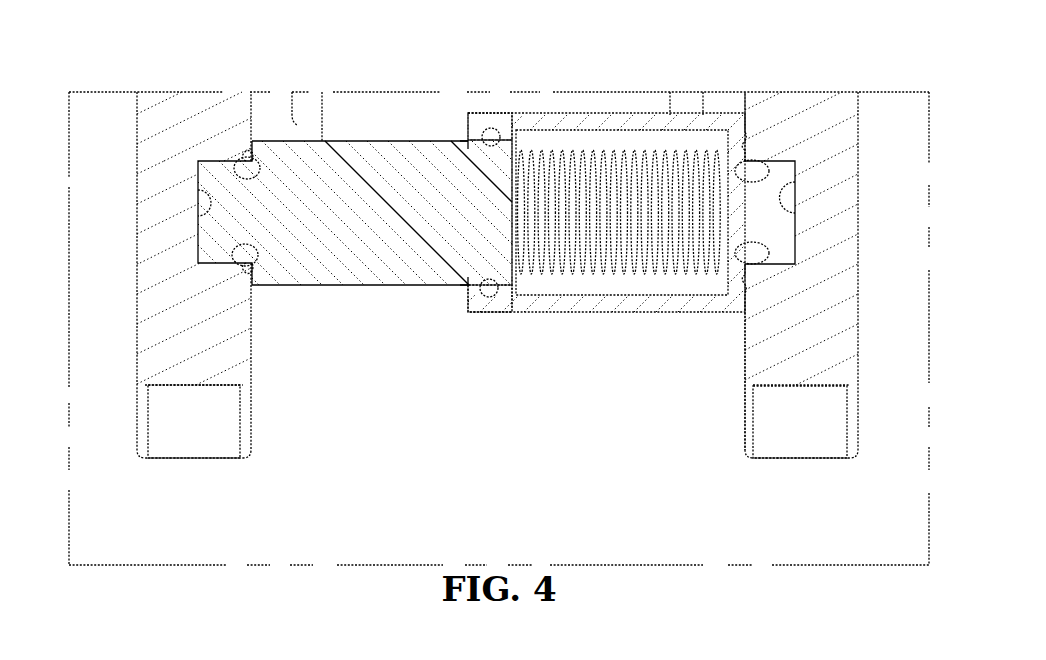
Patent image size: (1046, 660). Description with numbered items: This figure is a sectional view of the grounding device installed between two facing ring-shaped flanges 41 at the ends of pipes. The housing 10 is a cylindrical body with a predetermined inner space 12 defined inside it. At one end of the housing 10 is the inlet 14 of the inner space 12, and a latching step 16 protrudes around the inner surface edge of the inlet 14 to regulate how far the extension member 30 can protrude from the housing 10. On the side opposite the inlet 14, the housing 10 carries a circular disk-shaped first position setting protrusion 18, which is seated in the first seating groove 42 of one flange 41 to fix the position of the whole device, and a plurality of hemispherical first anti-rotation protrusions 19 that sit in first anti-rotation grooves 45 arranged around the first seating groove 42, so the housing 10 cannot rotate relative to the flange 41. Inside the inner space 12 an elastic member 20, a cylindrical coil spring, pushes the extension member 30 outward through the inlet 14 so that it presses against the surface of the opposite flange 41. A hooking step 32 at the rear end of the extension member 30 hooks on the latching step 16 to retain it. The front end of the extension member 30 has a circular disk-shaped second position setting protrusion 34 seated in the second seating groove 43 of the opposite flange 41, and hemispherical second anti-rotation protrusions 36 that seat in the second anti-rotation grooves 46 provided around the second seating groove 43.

The housing 10 is at (641, 318).
The inner space 12 is at (574, 290).
The inlet 14 is at (493, 135).
The latching step 16 is at (470, 125).
The first position setting protrusion 18 is at (785, 240).
The first anti-rotation protrusion 19 is at (748, 145).
The elastic member 20 is at (690, 277).
The extension member 30 is at (340, 288).
The hooking step 32 is at (500, 140).
The second position setting protrusion 34 is at (195, 248).
The second anti-rotation protrusion 36 is at (245, 158).
The flange 41 is at (196, 445).
The first seating groove 42 is at (800, 190).
The second seating groove 43 is at (205, 195).
The first anti-rotation groove 45 is at (762, 162).
The second anti-rotation groove 46 is at (218, 165).